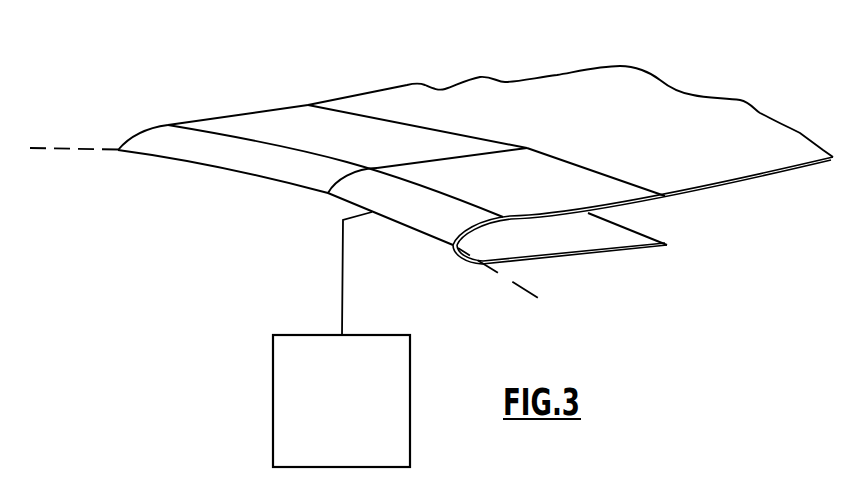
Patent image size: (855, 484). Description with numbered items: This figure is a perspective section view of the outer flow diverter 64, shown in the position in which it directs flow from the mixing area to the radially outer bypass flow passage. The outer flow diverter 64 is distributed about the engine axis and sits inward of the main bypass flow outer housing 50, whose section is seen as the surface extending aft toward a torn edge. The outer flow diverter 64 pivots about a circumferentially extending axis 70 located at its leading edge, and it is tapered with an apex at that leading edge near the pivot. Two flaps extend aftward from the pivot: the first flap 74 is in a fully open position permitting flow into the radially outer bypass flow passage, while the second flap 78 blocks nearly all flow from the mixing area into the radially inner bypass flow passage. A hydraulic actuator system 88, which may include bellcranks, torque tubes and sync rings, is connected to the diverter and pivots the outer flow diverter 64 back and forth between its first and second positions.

The main bypass flow outer housing 50 is at (717, 117).
The outer flow diverter 64 is at (510, 100).
The circumferentially extending axis 70 is at (62, 147).
The first flap 74 is at (497, 152).
The second flap 78 is at (640, 238).
The hydraulic actuator system 88 is at (358, 455).